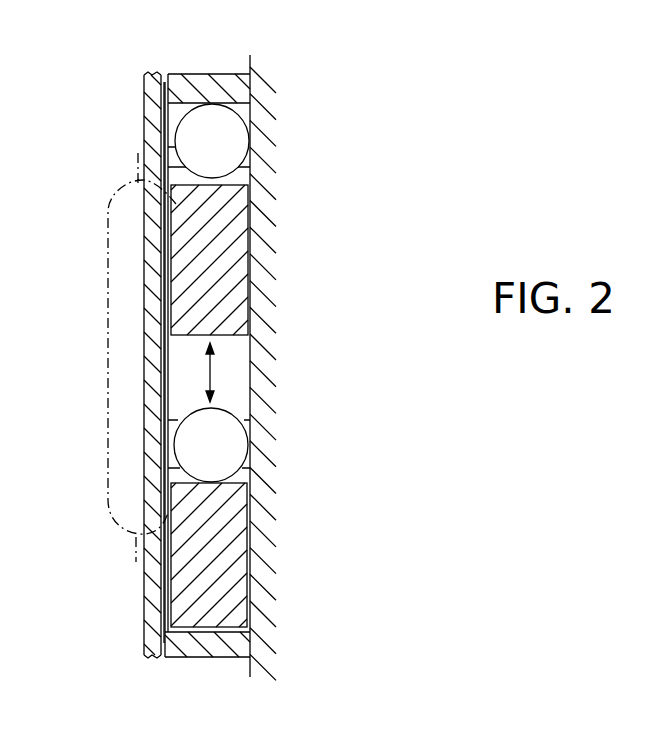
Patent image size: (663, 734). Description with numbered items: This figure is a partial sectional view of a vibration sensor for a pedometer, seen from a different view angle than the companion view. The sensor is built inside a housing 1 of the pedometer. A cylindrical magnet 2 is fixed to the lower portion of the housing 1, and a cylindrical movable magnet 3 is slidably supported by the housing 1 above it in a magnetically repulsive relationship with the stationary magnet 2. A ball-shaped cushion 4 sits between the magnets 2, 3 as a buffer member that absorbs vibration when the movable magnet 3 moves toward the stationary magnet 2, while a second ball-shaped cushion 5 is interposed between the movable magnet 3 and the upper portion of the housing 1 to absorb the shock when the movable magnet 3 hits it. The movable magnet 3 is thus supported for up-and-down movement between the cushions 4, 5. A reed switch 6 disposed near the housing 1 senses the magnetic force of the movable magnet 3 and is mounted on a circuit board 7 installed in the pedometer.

The housing 1 is at (228, 88).
The cylindrical magnet 2 is at (220, 583).
The cylindrical movable magnet 3 is at (222, 290).
The ball-shaped cushion 4 is at (218, 449).
The ball-shaped cushion 5 is at (220, 143).
The reed switch 6 is at (123, 255).
The circuit board 7 is at (150, 128).